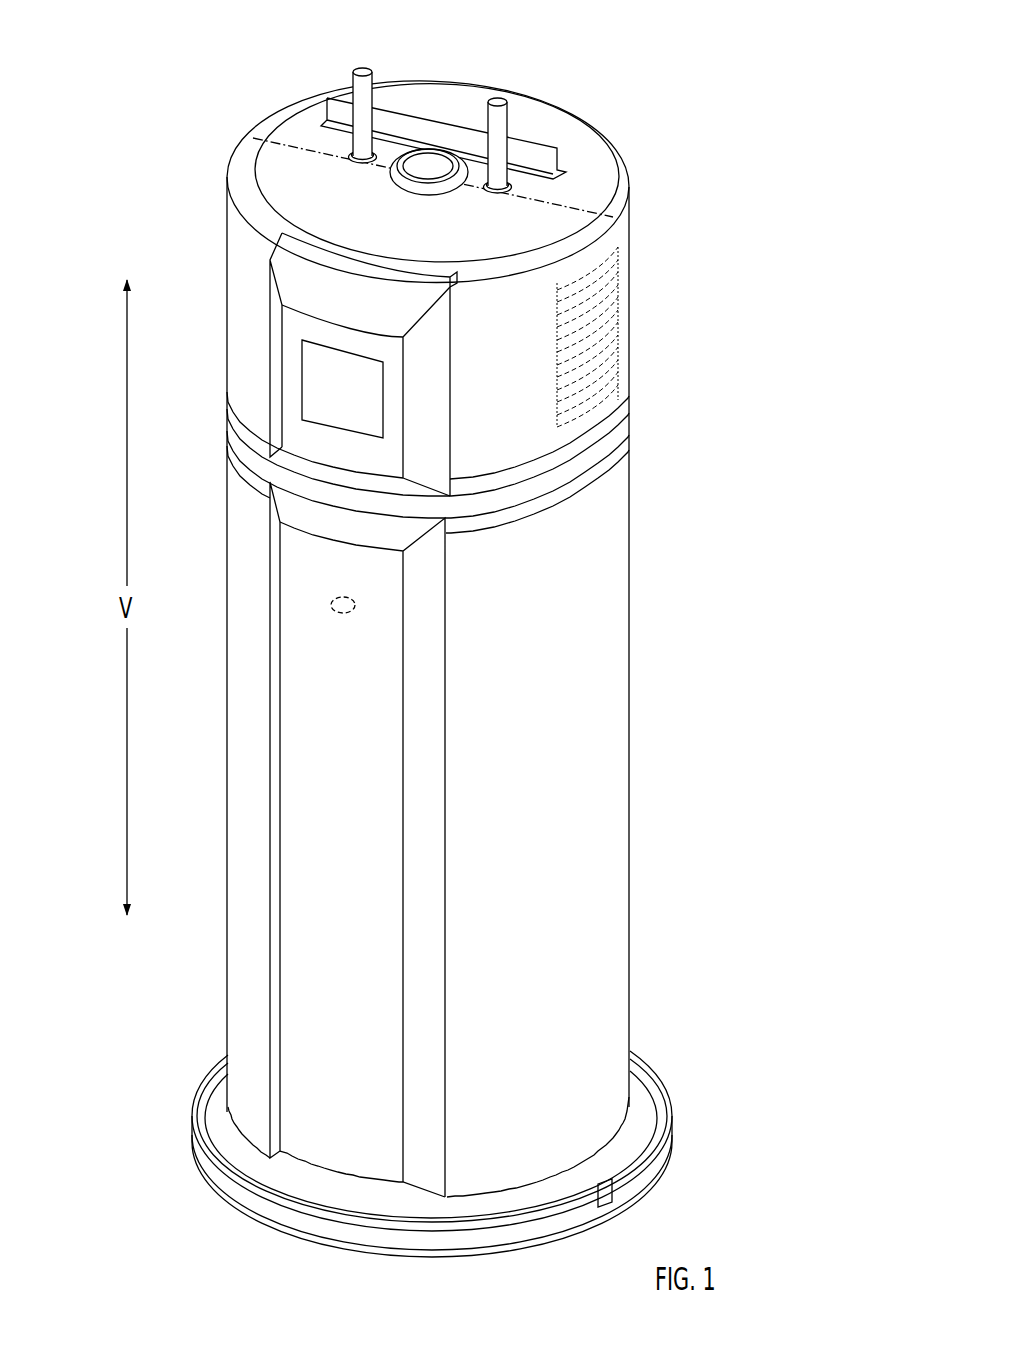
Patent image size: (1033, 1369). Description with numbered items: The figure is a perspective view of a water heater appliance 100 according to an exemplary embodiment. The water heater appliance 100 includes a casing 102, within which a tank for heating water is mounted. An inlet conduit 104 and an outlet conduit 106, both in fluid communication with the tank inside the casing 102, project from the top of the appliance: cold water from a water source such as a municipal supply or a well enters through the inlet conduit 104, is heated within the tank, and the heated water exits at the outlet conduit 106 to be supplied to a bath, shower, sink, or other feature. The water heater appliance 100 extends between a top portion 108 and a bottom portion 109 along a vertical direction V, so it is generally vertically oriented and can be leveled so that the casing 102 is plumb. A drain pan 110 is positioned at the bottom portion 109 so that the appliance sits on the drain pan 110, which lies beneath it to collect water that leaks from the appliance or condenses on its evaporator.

The water heater appliance 100 is at (673, 139).
The casing 102 is at (607, 587).
The inlet conduit 104 is at (353, 84).
The outlet conduit 106 is at (500, 121).
The top portion 108 is at (206, 170).
The bottom portion 109 is at (176, 1096).
The drain pan 110 is at (688, 1109).